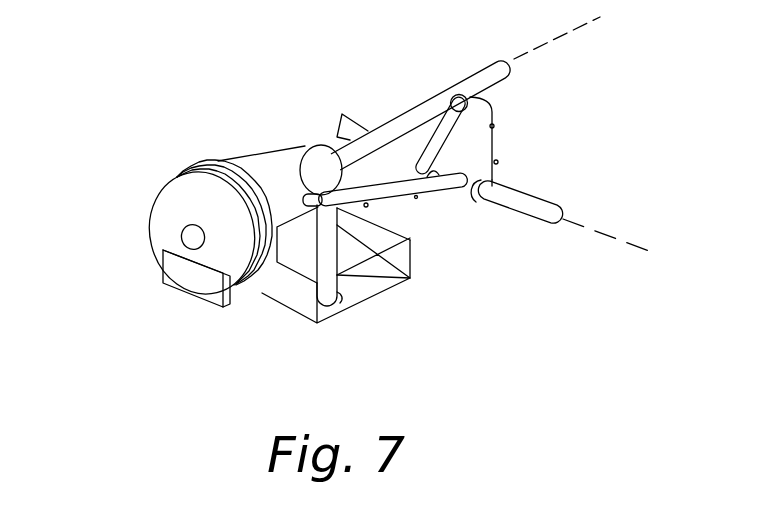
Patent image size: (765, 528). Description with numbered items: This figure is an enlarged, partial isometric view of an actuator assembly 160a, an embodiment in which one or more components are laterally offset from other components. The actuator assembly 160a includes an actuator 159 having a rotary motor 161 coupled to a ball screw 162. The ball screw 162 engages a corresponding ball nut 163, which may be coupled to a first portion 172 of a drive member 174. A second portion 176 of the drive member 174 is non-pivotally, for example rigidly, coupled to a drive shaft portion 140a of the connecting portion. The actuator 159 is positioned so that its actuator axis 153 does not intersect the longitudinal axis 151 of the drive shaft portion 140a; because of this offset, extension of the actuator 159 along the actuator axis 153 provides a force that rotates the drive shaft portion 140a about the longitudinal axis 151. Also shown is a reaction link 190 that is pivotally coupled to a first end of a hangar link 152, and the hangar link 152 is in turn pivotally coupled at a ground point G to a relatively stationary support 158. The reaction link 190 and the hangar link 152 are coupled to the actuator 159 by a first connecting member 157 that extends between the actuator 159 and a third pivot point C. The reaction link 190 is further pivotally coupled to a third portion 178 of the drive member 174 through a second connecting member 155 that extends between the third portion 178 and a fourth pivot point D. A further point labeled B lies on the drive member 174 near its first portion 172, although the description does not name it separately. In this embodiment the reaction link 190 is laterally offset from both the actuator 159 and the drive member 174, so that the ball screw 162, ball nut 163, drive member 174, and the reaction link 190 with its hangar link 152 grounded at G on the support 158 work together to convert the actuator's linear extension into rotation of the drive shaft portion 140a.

The actuator assembly 160a is at (181, 366).
The rotary motor 161 is at (173, 227).
The first connecting member 157 is at (303, 148).
The third portion of the drive member 178 is at (368, 132).
The actuator 159 is at (385, 114).
The actuator axis 153 is at (513, 48).
The ball nut 163 is at (432, 108).
The ball screw 162 is at (448, 90).
The first portion of the drive member 172 is at (494, 108).
The pivot point B is at (494, 125).
The second connecting member 155 is at (454, 168).
The third pivot point C is at (367, 206).
The fourth pivot point D is at (455, 198).
The reaction link 190 is at (416, 199).
The drive member 174 is at (498, 163).
The drive shaft portion 140a is at (517, 210).
The longitudinal axis 151 is at (588, 228).
The second portion of the drive member 176 is at (494, 201).
The hangar link 152 is at (340, 225).
The relatively stationary support 158 is at (266, 300).
The ground point G is at (338, 293).